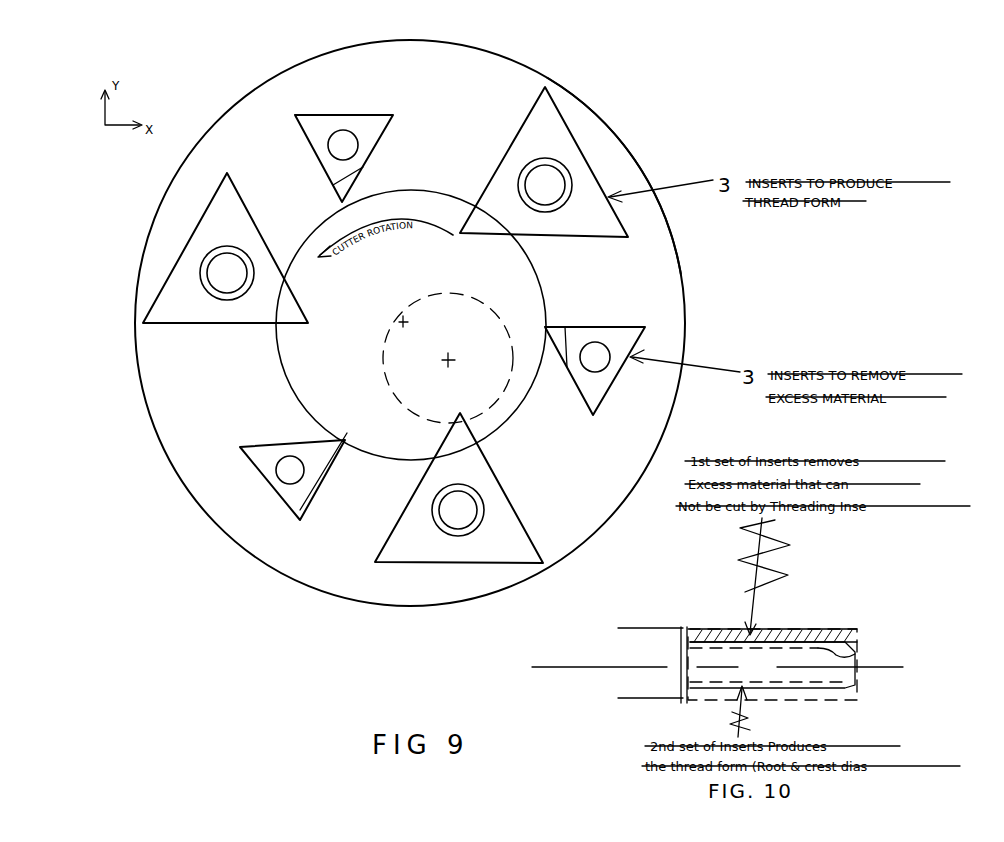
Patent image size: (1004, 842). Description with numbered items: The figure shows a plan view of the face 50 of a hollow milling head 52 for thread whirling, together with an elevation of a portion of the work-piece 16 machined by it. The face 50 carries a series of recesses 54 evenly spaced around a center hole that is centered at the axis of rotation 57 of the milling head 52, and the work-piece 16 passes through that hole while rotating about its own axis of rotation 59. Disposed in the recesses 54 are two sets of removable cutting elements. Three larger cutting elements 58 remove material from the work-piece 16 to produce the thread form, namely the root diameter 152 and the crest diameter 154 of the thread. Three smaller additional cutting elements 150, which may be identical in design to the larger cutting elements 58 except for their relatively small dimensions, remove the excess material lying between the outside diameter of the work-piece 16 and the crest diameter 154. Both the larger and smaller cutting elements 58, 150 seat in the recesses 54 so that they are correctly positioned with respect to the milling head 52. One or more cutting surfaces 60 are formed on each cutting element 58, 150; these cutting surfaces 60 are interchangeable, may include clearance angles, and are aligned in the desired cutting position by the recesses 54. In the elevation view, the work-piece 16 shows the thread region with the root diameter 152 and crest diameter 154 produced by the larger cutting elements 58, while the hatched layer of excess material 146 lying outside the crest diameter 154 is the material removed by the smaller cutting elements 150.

In FIG. 9, the face 50 is at (497, 85).
In FIG. 9, the hollow milling head 52 is at (698, 113).
In FIG. 9, the recess 54 is at (407, 338).
In FIG. 9, the cutting element 58 is at (581, 173).
In FIG. 9, the additional cutting element 150 is at (318, 115).
In FIG. 9, the cutting surface 60 is at (333, 198).
In FIG. 9, the work-piece 16 is at (388, 382).
In FIG. 10, the work-piece 16 is at (645, 628).
In FIG. 9, the axis of rotation of the milling head 57 is at (405, 320).
In FIG. 9, the axis of rotation of the work-piece 59 is at (450, 363).
In FIG. 10, the axis of rotation of the work-piece 59 is at (567, 670).
In FIG. 10, the excess material layer 146 is at (797, 633).
In FIG. 10, the crest diameter 154 is at (843, 635).
In FIG. 10, the root diameter 152 is at (855, 653).